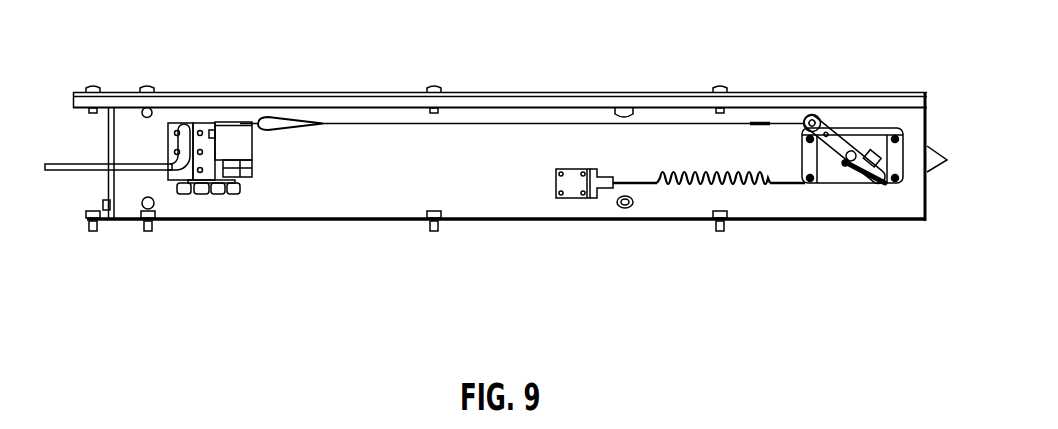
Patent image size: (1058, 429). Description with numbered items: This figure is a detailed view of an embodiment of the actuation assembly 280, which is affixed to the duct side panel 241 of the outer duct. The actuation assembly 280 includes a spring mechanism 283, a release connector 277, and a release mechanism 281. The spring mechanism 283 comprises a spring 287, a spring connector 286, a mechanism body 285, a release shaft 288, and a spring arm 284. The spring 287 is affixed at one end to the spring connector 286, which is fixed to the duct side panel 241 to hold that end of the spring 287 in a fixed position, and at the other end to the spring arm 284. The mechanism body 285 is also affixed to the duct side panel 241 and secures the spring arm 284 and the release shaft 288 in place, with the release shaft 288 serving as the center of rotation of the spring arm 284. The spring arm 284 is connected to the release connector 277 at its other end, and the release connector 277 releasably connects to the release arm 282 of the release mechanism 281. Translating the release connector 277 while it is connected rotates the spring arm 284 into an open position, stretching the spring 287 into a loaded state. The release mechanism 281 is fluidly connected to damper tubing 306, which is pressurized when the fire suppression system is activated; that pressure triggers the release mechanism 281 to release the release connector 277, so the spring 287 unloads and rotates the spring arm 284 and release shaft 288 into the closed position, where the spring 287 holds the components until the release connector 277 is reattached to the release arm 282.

The duct side panel 241 is at (907, 174).
The release connector 277 is at (500, 123).
The actuation assembly 280 is at (500, 185).
The release mechanism 281 is at (229, 108).
The release arm 282 is at (257, 119).
The spring mechanism 283 is at (868, 135).
The spring arm 284 is at (822, 120).
The mechanism body 285 is at (880, 142).
The spring connector 286 is at (572, 195).
The spring 287 is at (783, 186).
The release shaft 288 is at (839, 214).
The damper tubing 306 is at (57, 172).